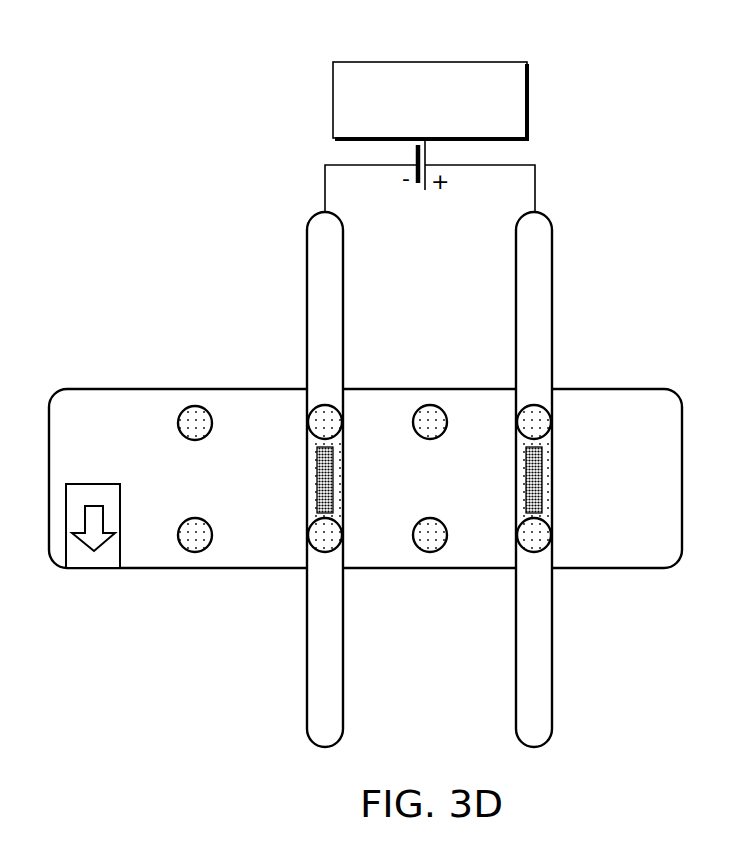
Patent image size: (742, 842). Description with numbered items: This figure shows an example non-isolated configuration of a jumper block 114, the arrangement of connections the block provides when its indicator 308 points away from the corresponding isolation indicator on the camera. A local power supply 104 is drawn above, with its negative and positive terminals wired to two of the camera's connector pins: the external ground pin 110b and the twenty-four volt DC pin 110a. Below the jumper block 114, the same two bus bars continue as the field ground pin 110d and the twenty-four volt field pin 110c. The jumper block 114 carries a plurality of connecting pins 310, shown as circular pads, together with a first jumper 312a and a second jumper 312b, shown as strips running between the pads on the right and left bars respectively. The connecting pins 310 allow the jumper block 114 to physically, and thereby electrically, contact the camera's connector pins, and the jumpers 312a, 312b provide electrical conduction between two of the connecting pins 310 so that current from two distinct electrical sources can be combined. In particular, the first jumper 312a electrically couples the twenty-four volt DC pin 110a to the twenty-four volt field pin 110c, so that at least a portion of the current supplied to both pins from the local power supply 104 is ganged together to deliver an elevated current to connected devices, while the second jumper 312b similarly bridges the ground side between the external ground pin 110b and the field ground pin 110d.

The local power supply 104 is at (428, 62).
The jumper block 114 is at (131, 389).
The indicator 308 is at (93, 484).
The connecting pins 310 is at (531, 420).
The first jumper 312a is at (537, 487).
The second jumper 312b is at (324, 480).
The 24 V DC pin 110a is at (552, 323).
The external ground pin 110b is at (343, 322).
The 24 V field pin 110c is at (552, 630).
The field ground pin 110d is at (343, 630).